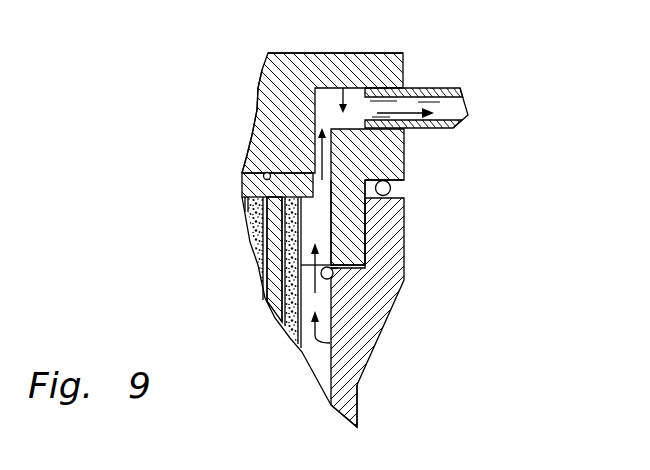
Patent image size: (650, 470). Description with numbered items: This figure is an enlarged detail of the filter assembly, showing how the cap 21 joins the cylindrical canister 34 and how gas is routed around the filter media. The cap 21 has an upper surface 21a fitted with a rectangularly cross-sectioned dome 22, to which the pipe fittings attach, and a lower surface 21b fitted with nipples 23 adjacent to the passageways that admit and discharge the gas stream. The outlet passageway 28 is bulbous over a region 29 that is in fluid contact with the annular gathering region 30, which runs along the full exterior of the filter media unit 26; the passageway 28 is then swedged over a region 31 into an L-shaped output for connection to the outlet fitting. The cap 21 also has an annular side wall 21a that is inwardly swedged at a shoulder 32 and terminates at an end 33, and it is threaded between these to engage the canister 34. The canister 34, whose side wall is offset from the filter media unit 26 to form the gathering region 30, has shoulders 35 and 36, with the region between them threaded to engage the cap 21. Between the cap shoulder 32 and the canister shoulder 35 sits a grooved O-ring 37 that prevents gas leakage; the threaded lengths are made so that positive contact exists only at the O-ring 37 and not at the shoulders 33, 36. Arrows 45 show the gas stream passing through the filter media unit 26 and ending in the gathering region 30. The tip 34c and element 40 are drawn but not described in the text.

The cap 21 is at (403, 53).
The upper surface / annular side wall 21a is at (273, 53).
The lower surface 21b is at (240, 190).
The dome 22 is at (355, 62).
The nipples 23 is at (268, 175).
The filter media unit 26 is at (282, 318).
The outlet passageway 28 is at (343, 88).
The bulbous region 29 is at (324, 230).
The annular gathering region 30 is at (372, 347).
The swedged region 31 is at (330, 107).
The shoulder 32 is at (391, 184).
The end 33 is at (334, 271).
The canister 34 is at (410, 245).
The tip of valve member 34c is at (345, 391).
The shoulder 35 is at (402, 192).
The shoulder 36 is at (333, 278).
The grooved O-ring 37 is at (400, 182).
The outlet conduit 40 is at (457, 88).
The arrows 45 is at (313, 150).